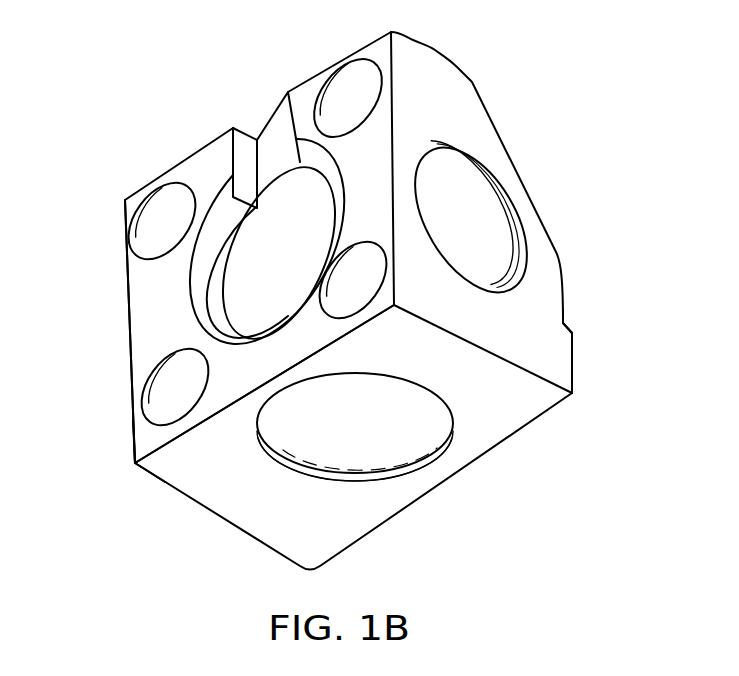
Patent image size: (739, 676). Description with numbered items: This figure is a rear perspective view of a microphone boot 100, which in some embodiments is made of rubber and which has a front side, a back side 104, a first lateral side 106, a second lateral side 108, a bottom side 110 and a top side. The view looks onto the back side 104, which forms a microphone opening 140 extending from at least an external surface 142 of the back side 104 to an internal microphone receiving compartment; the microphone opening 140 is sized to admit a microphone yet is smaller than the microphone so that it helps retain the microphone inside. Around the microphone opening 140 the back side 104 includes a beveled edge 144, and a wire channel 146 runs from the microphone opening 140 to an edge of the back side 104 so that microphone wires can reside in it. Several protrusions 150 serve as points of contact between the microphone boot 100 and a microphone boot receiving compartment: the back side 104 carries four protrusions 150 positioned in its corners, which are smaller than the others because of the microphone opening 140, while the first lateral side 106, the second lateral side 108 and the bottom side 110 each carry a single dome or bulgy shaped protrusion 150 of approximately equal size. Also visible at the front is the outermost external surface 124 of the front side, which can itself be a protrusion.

The microphone boot 100 is at (147, 117).
The back side 104 is at (372, 132).
The first lateral side 106 is at (541, 300).
The second lateral side 108 is at (127, 273).
The bottom side 110 is at (528, 403).
The outermost external surface 124 is at (575, 352).
The microphone opening 140 is at (237, 293).
The external surface 142 is at (143, 437).
The beveled edge 144 is at (197, 275).
The wire channel 146 is at (261, 136).
The protrusion 150 is at (360, 87).